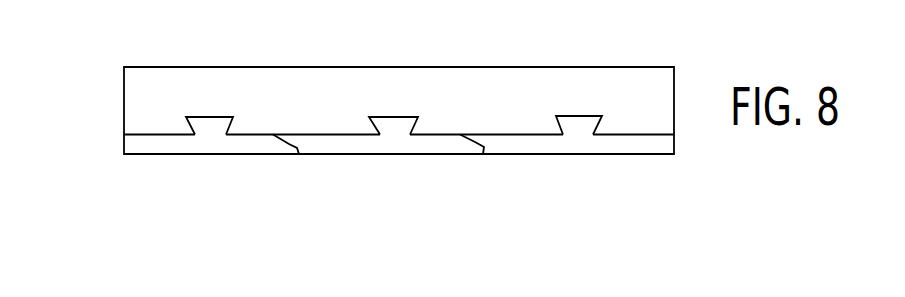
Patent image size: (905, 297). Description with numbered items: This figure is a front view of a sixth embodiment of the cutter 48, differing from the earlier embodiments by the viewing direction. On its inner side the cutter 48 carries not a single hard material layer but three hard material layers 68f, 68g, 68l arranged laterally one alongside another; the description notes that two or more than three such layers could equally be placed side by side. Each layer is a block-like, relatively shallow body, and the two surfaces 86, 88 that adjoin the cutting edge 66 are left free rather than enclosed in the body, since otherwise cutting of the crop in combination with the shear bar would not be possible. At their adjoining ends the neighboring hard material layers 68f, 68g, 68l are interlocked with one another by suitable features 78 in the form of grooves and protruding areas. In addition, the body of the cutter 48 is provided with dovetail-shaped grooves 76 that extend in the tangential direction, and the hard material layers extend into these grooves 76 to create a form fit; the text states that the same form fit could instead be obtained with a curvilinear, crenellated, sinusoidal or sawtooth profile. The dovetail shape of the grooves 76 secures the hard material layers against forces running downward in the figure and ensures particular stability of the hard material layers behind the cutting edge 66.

The cutter 48 is at (110, 77).
The cutting edge 66 is at (307, 148).
The dovetail-shaped grooves 76 is at (212, 122).
The interlocking features 78 is at (273, 134).
The surface adjoining the cutting edge 86 is at (191, 158).
The surface adjoining the cutting edge 88 is at (170, 148).
The hard material layer 68f is at (212, 147).
The hard material layer 68g is at (353, 150).
The layer portion 68l is at (554, 143).